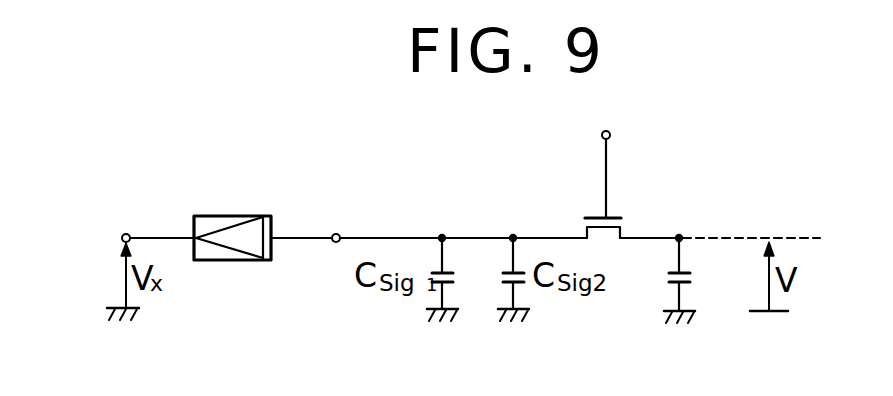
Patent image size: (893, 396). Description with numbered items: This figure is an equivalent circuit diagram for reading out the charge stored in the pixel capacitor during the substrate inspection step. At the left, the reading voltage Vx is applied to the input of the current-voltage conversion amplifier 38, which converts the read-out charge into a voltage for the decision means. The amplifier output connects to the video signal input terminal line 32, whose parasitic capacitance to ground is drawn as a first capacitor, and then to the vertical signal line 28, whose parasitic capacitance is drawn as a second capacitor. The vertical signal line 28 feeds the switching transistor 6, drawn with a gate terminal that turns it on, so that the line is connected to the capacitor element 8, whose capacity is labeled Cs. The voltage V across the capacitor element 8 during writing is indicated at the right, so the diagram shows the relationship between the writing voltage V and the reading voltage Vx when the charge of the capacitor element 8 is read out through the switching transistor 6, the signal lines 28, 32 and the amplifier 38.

The current-voltage conversion amplifier 38 is at (228, 216).
The video signal input terminal line 32 is at (392, 238).
The vertical signal line 28 is at (535, 238).
The thin film transistor 6 is at (615, 218).
The capacitor element 8 is at (670, 280).